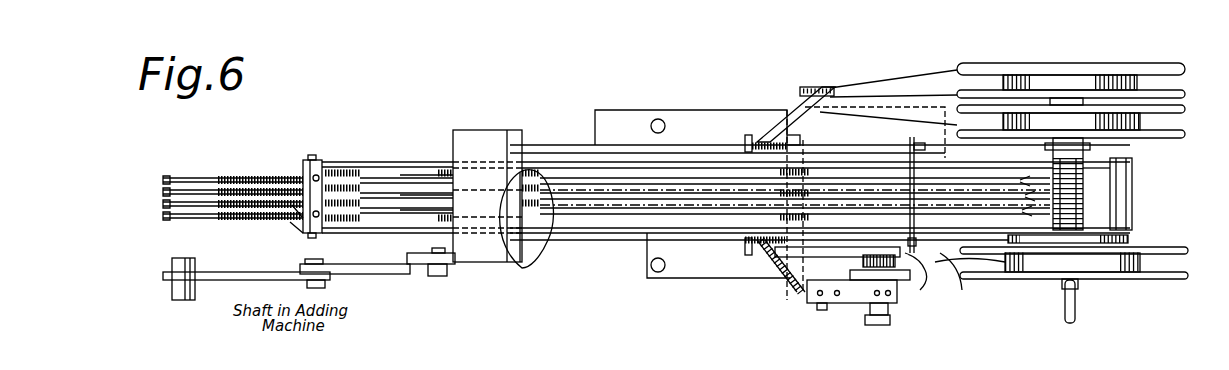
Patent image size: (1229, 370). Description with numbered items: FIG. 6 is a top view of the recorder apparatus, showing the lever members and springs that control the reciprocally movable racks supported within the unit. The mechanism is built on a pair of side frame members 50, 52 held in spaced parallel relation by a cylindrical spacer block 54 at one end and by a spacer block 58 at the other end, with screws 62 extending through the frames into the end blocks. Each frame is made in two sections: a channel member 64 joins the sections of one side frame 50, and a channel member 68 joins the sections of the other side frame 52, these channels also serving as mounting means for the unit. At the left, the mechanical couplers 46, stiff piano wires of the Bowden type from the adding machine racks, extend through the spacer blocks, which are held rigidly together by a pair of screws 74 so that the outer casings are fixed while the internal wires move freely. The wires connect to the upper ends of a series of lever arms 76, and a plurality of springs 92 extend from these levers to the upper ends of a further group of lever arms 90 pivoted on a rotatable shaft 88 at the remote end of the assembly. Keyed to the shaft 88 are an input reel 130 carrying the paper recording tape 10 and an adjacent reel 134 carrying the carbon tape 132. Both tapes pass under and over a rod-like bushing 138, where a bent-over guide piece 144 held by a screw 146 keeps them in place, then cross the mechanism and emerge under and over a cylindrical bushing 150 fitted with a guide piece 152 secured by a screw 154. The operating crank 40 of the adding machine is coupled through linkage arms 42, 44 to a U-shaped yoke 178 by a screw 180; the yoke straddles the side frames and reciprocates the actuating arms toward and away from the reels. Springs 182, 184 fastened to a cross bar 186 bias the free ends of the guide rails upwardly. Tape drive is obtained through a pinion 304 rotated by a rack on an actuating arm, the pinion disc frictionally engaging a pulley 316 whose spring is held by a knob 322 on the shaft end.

The paper recording tape 10 is at (898, 88).
The operating crank 40 is at (172, 294).
The linkage arm 42 is at (276, 281).
The linkage arm 44 is at (396, 273).
The mechanical couplers 46 is at (270, 236).
The side frame member 50 is at (395, 162).
The side frame member 52 is at (365, 233).
The cylindrical spacer block 54 is at (1130, 190).
The spacer block 58 is at (301, 232).
The screws 62 is at (314, 154).
The channel member 64 is at (643, 100).
The channel member 68 is at (681, 279).
The screws 74 is at (318, 175).
The lever arms 76 is at (418, 210).
The rotatable shaft 88 is at (1065, 306).
The lever arms 90 is at (1083, 192).
The springs 92 is at (522, 262).
The input reel 130 is at (1000, 64).
The carbon tape 132 is at (890, 118).
The reel 134 is at (1182, 132).
The rod-like bushing 138 is at (757, 140).
The bent-over guide piece 144 is at (770, 130).
The screw 146 is at (845, 66).
The cylindrical bushing 150 is at (782, 275).
The guide piece 152 is at (848, 305).
The screw 154 is at (822, 311).
The U-shaped yoke 178 is at (486, 138).
The screw 180 is at (440, 277).
The spring 182 is at (912, 140).
The spring 184 is at (920, 290).
The cross bar 186 is at (962, 284).
The pinion 304 is at (862, 262).
The pulley 316 is at (906, 281).
The knob 322 is at (890, 320).